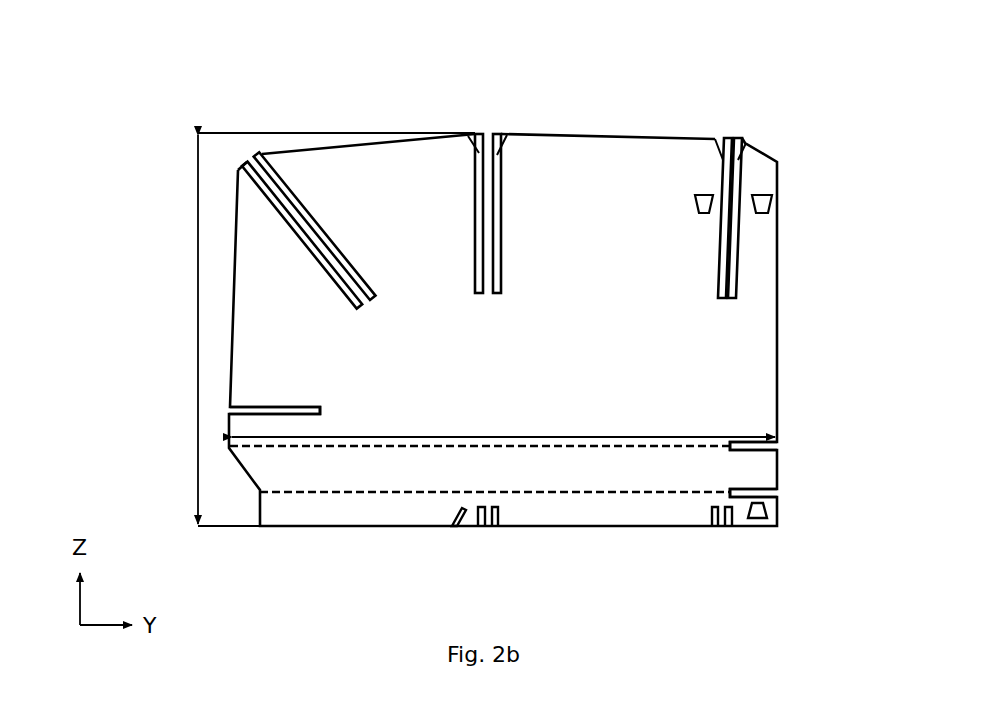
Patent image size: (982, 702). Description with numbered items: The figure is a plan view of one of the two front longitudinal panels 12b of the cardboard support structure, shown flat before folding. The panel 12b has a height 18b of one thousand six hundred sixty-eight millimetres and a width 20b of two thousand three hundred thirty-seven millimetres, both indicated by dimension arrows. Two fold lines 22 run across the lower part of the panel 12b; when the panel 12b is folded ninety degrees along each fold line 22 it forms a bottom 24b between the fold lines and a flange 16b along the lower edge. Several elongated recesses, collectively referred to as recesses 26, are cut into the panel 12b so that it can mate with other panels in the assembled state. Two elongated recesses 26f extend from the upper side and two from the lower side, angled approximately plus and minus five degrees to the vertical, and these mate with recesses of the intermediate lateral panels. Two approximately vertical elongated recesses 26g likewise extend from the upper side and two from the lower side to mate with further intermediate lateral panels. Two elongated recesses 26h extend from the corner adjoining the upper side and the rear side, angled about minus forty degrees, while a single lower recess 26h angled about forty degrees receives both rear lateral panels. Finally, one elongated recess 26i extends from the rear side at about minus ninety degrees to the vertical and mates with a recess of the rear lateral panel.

The front longitudinal panel 12b is at (155, 76).
The flange 16b is at (620, 527).
The height 18b is at (306, 329).
The width 20b is at (503, 422).
The fold lines 22 is at (305, 492).
The bottom 24b is at (515, 482).
The recesses 26 is at (757, 443).
The elongated recesses 26f is at (723, 160).
The elongated recesses 26g is at (478, 145).
The elongated recesses 26h is at (273, 160).
The elongated recess 26i is at (268, 407).